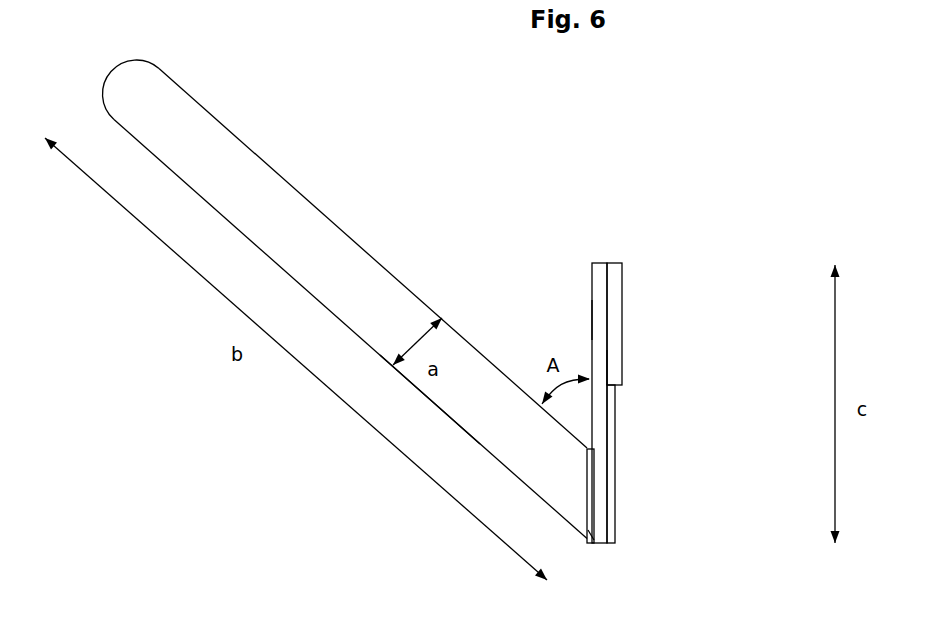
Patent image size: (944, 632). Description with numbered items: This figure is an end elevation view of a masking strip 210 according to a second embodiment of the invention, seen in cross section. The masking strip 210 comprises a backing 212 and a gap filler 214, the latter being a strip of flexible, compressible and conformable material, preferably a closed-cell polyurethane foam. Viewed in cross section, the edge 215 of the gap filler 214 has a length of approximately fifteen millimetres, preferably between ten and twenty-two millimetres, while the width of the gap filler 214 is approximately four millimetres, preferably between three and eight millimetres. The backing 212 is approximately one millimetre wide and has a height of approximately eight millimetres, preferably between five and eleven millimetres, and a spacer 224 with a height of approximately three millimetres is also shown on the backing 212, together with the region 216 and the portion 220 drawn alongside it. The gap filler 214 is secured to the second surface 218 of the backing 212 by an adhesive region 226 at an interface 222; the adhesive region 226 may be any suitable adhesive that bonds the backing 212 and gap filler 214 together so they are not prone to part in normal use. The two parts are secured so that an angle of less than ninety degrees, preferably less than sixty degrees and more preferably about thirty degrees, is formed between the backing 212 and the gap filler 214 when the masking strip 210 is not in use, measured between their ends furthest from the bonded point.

The masking strip 210 is at (608, 184).
The backing 212 is at (600, 280).
The gap filler 214 is at (294, 204).
The edge 215 is at (431, 400).
The bonding layer 216 is at (607, 368).
The second surface 218 is at (588, 318).
The backing strip 220 is at (616, 451).
The interface 222 is at (592, 515).
The spacer 224 is at (613, 305).
The adhesive region 226 is at (591, 513).